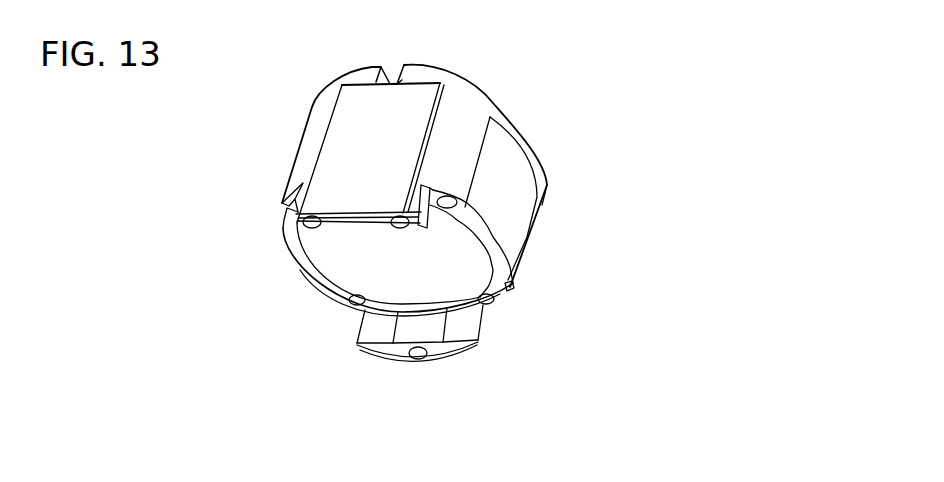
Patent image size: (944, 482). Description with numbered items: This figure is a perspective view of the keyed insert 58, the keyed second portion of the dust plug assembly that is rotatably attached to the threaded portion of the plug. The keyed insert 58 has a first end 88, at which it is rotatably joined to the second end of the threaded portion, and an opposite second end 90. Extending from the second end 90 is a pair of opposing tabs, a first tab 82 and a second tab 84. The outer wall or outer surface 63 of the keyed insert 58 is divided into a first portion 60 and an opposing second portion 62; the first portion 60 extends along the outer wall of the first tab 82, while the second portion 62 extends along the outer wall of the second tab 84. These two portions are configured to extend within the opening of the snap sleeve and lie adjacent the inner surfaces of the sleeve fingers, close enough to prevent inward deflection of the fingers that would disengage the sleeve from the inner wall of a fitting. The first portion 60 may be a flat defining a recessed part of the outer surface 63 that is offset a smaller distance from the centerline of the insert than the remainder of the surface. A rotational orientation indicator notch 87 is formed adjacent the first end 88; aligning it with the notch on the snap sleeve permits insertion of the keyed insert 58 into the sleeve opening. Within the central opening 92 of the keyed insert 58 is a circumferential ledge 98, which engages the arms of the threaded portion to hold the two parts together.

The keyed insert 58 is at (223, 148).
The first portion 60 is at (350, 140).
The second portion 62 is at (452, 358).
The outer surface 63 is at (468, 135).
The first tab 82 is at (328, 223).
The second tab 84 is at (372, 338).
The rotational orientation indicator notch 87 is at (388, 77).
The first end 88 is at (547, 148).
The second end 90 is at (498, 258).
The central opening 92 is at (365, 238).
The circumferential ledge 98 is at (442, 226).